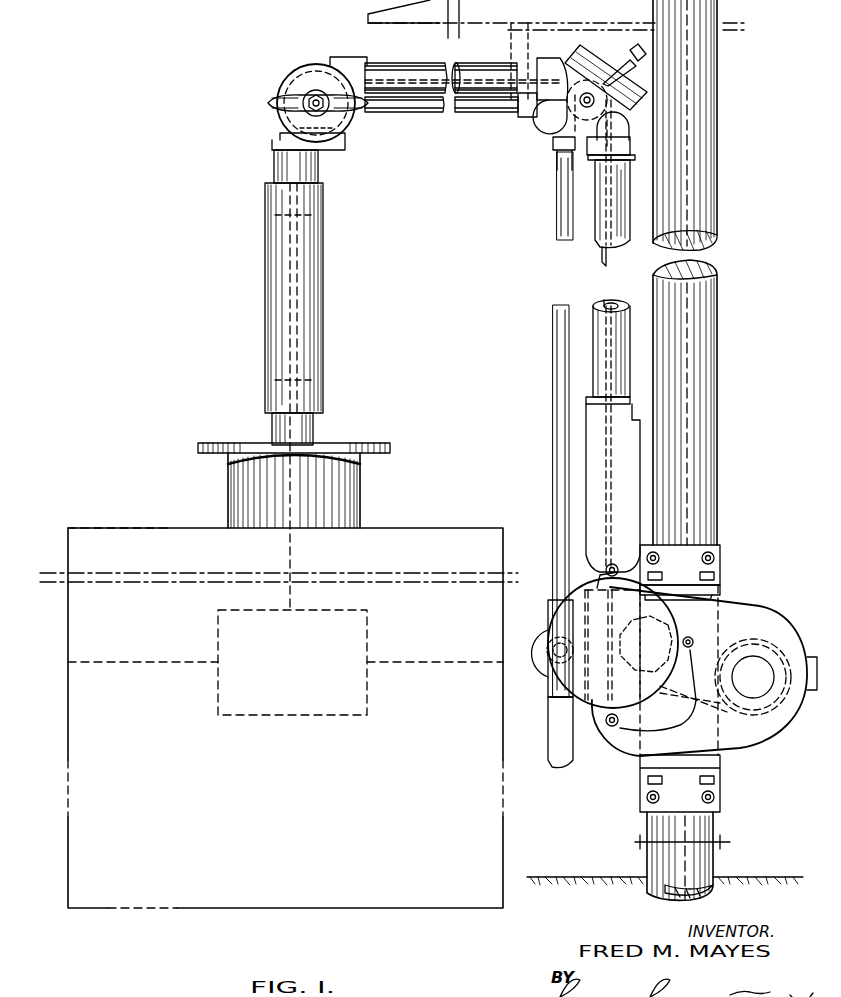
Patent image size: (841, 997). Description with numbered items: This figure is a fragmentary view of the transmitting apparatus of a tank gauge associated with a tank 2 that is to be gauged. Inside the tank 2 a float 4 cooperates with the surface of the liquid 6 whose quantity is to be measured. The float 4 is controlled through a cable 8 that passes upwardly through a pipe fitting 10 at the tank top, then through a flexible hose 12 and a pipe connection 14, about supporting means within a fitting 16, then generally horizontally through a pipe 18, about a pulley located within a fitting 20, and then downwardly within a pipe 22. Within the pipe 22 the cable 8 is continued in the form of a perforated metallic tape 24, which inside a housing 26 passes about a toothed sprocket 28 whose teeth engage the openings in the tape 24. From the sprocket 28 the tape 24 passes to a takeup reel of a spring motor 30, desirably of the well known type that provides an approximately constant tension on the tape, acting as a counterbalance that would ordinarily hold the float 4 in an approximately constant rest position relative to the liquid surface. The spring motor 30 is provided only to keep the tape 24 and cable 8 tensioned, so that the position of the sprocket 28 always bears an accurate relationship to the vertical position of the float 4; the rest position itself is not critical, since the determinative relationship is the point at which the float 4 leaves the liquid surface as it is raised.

The tank 2 is at (450, 528).
The float 4 is at (368, 645).
The liquid 6 is at (438, 663).
The cable 8 is at (608, 260).
The pipe fitting 10 is at (313, 428).
The flexible hose 12 is at (322, 350).
The pipe connection 14 is at (319, 162).
The fitting 16 is at (298, 80).
The pipe 18 is at (414, 70).
The fitting 20 is at (585, 63).
The pipe 22 is at (628, 190).
The perforated metallic tape 24 is at (608, 303).
The housing 26 is at (742, 608).
The toothed sprocket 28 is at (672, 613).
The spring motor 30 is at (788, 724).